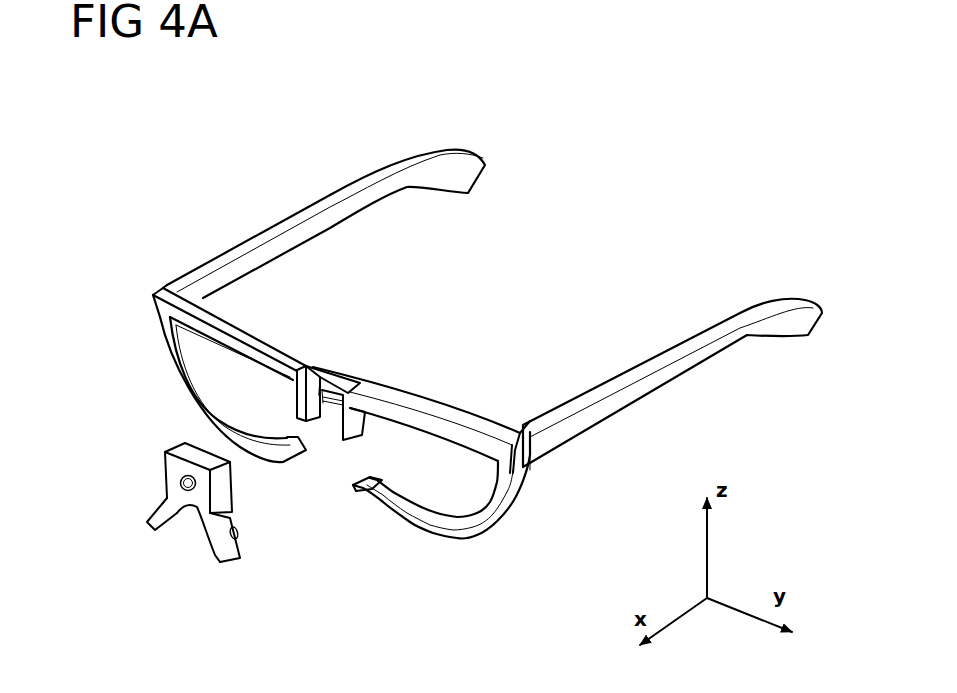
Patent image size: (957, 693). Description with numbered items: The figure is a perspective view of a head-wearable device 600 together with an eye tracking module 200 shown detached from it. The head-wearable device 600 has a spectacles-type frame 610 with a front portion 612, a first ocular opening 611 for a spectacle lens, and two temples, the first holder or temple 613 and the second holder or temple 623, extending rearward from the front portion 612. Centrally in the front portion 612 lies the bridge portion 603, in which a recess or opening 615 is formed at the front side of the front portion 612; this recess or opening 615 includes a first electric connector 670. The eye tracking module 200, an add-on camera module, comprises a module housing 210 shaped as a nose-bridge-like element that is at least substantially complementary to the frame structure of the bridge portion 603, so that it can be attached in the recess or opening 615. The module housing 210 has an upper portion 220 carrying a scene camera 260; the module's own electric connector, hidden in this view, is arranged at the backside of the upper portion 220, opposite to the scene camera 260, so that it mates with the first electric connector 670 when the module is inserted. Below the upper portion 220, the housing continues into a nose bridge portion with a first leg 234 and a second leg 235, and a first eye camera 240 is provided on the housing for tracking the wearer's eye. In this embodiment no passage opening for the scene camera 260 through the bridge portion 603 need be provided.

The head-wearable device 600 is at (357, 133).
The second/right holder/temple 623 is at (222, 230).
The first/left holder/temple 613 is at (663, 325).
The frame 610 is at (475, 552).
The front portion of frame 612 is at (408, 363).
The first/left ocular opening 611 is at (440, 488).
The recess or opening in frame 615 is at (327, 370).
The bridge portion 603 is at (348, 360).
The first electric connector 670 is at (320, 382).
The eye tracking module 200 is at (173, 552).
The upper portion of module housing 220 is at (147, 453).
The scene camera 260 is at (178, 480).
The module housing 210 is at (143, 507).
The second/right leg 235 is at (135, 523).
The first/left leg 234 is at (227, 573).
The first/left eye camera 240 is at (247, 533).